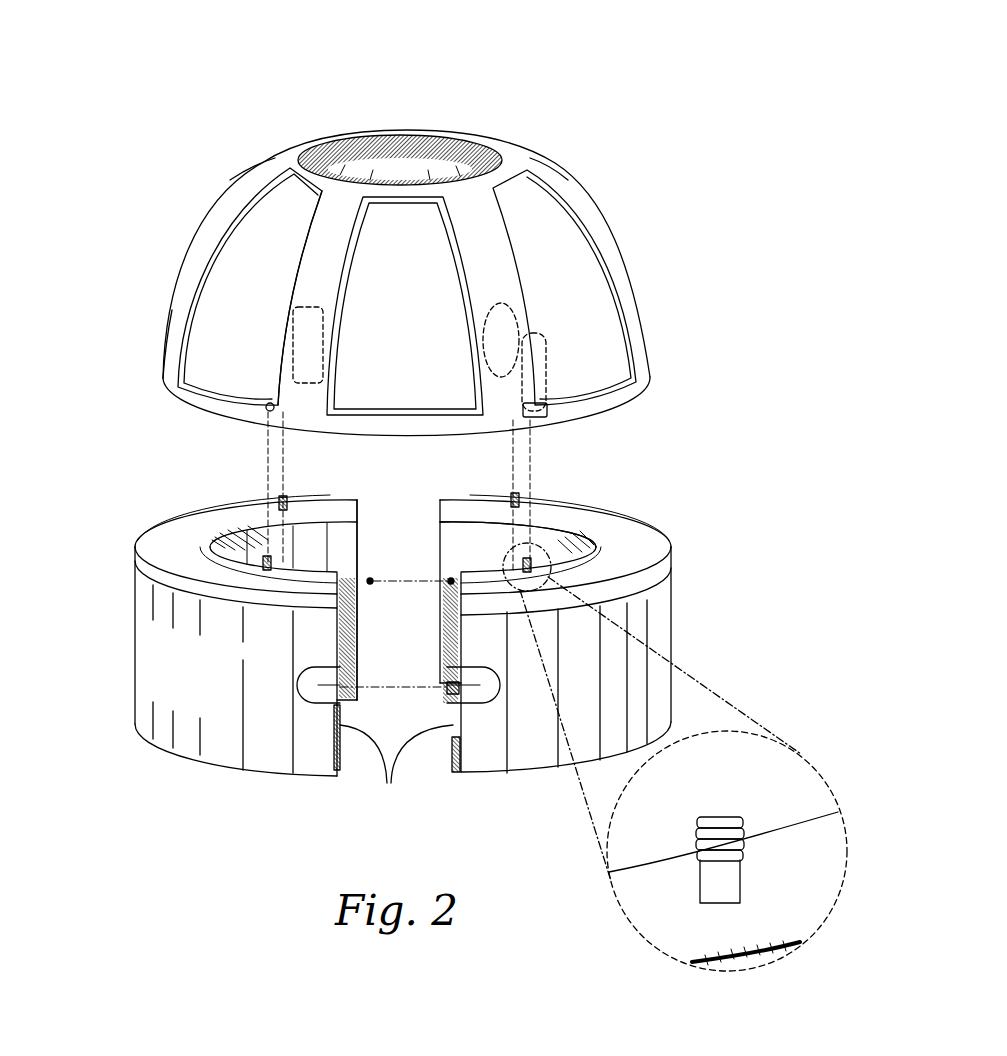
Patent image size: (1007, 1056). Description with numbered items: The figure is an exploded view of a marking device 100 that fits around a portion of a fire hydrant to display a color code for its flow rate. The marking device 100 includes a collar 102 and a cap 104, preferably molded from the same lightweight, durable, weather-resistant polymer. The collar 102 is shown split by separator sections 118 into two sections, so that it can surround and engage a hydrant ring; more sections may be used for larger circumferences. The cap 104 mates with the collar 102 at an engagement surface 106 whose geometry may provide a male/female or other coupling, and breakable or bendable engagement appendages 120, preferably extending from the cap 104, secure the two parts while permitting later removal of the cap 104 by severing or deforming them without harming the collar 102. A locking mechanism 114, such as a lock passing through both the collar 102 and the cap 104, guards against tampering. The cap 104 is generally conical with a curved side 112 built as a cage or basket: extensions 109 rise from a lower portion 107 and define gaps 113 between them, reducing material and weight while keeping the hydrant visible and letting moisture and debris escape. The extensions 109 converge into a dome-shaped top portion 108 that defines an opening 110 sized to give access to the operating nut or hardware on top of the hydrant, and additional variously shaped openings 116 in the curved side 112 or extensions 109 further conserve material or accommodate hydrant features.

The marking device 100 is at (548, 93).
The collar 102 is at (670, 567).
The cap 104 is at (630, 282).
The engagement surface 106 is at (343, 553).
The lower portion 107 is at (160, 377).
The top portion 108 is at (253, 167).
The extensions 109 is at (543, 161).
The opening 110 is at (400, 134).
The curved side 112 is at (177, 293).
The gaps 113 is at (237, 243).
The locking mechanism 114 is at (563, 532).
The openings 116 is at (323, 313).
The separator sections 118 is at (396, 767).
The engagement appendages 120 is at (215, 560).